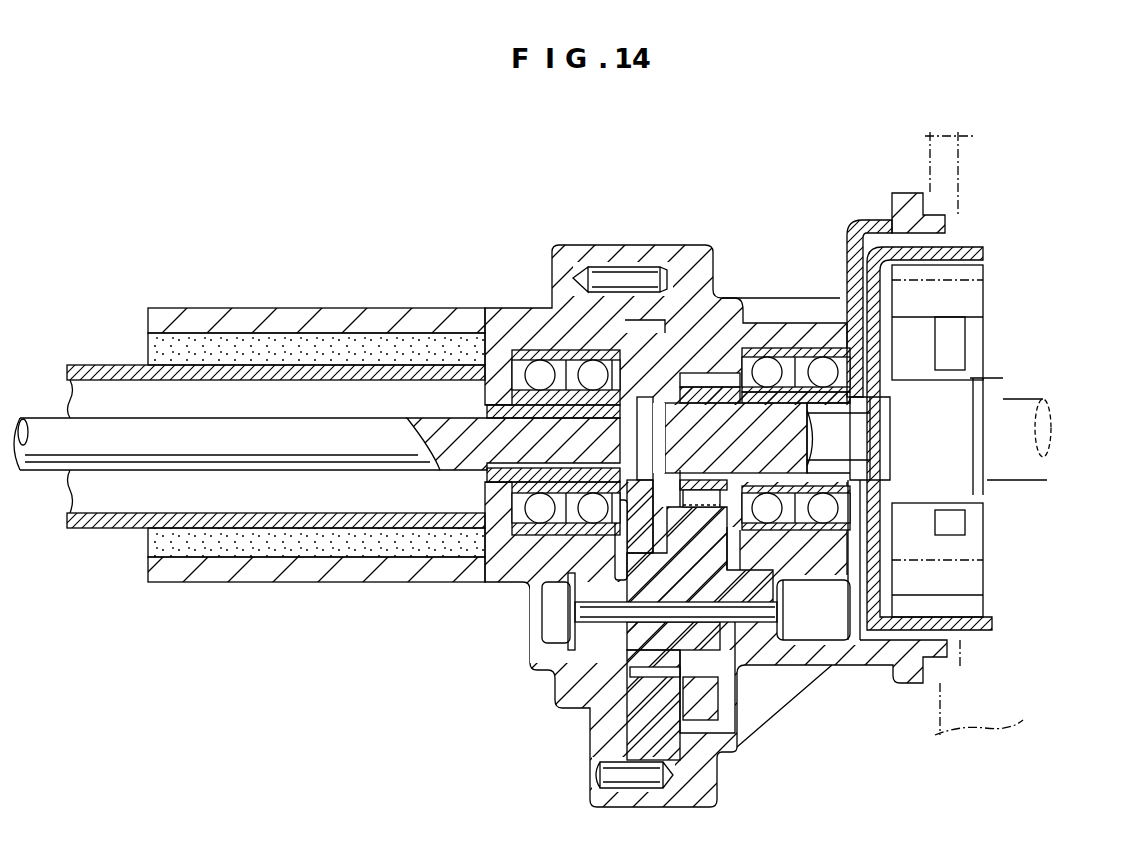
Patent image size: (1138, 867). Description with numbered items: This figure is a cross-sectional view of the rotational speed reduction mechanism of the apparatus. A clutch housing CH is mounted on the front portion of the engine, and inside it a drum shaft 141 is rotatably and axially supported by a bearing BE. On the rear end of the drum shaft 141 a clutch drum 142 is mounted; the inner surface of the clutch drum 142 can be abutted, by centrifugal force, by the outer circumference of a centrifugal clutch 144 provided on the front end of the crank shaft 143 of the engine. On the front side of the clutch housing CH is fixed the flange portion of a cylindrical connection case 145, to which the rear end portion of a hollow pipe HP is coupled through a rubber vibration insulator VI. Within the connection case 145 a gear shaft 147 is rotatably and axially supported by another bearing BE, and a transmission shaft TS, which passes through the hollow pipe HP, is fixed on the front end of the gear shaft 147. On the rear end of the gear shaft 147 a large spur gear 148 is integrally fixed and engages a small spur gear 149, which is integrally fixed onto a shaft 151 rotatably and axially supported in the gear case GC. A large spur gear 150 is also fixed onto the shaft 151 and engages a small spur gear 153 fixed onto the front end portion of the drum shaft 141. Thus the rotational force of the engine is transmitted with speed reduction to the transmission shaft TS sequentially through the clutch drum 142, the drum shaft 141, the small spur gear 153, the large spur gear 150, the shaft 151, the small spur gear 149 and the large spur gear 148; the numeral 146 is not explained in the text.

The drum shaft 141 is at (830, 435).
The clutch drum 142 is at (960, 246).
The crank shaft 143 is at (1013, 405).
The centrifugal clutch 144 is at (990, 545).
The connection case 145 is at (317, 318).
The gear case housing 146 is at (588, 712).
The gear shaft 147 is at (527, 410).
The large spur gear 148 is at (643, 340).
The small spur gear 149 is at (710, 763).
The large spur gear 150 is at (738, 673).
The shaft 151 is at (745, 645).
The small spur gear 153 is at (700, 390).
The hollow pipe HP is at (87, 368).
The rubber vibration insulator VI is at (205, 350).
The transmission shaft TS is at (335, 450).
The bearing BE is at (767, 372).
The clutch housing CH is at (850, 220).
The gear case GC is at (556, 746).